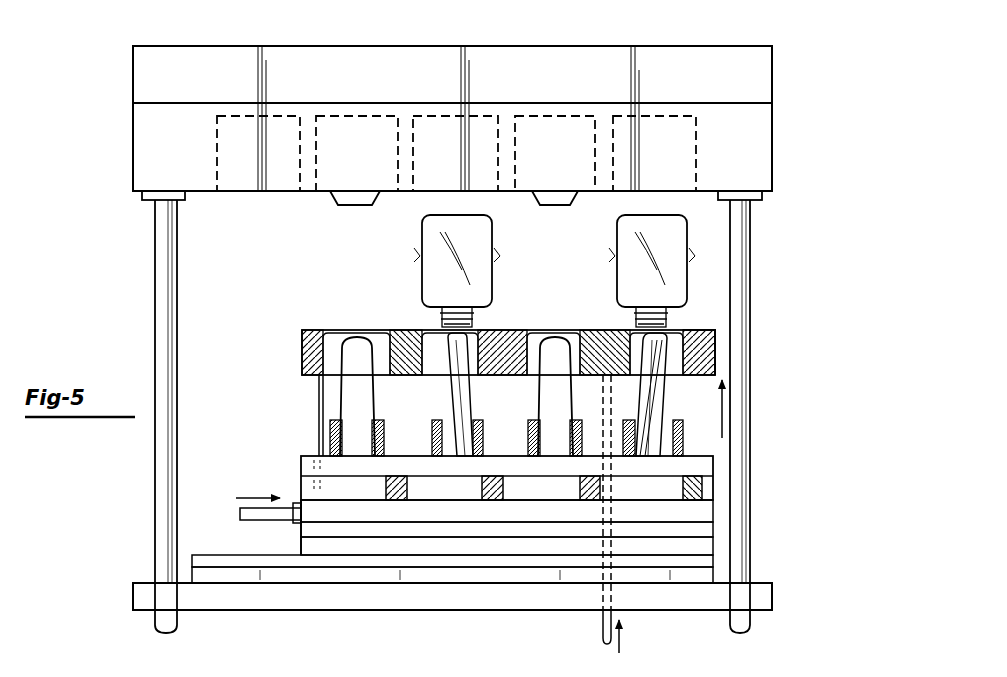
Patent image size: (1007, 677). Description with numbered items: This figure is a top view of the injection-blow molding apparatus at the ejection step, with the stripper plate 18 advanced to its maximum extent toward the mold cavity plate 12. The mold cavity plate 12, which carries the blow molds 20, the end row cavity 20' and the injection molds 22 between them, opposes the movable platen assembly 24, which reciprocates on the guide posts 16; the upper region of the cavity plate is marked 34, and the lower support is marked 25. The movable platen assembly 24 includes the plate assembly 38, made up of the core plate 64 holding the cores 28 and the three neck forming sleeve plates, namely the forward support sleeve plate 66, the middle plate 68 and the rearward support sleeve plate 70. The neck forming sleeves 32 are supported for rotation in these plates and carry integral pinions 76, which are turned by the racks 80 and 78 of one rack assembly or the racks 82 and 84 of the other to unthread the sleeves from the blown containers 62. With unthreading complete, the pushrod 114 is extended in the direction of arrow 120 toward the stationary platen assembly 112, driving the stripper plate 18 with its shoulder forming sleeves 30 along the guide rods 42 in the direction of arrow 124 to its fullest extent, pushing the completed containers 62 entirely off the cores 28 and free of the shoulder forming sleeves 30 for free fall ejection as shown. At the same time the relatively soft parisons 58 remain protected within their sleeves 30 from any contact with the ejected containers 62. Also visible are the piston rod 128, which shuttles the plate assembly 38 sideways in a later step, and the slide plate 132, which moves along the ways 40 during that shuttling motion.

The mold cavity plate 12 is at (738, 151).
The upper compartment 34 is at (678, 83).
The stationary platen assembly 112 is at (128, 166).
The blow mold 20 is at (506, 175).
The end row cavity 20' is at (258, 170).
The injection mold 22 is at (330, 200).
The guide post 16 is at (176, 286).
The blown container 62 is at (616, 270).
The shoulder forming sleeve 30 is at (392, 330).
The stripper plate 18 is at (710, 330).
The parison 58 is at (352, 337).
The neck forming sleeve 32 is at (434, 427).
The core 28 is at (664, 404).
The guide rod 42 is at (318, 415).
The forward support sleeve plate 66 is at (507, 456).
The pinion 76 is at (482, 490).
The rack 80 is at (386, 490).
The rack 78 is at (580, 490).
The rack 82 is at (482, 500).
The rack 84 is at (655, 504).
The neck forming sleeve plate 68 is at (713, 485).
The rearward support sleeve plate 70 is at (707, 515).
The core plate 64 is at (707, 530).
The plate assembly 38 is at (296, 537).
The slide plate 132 is at (707, 547).
The ways 40 is at (713, 578).
The piston rod 128 is at (240, 513).
The pushrod 114 is at (602, 634).
The arrow 120 is at (623, 637).
The arrow 124 is at (722, 415).
The movable platen assembly 24 is at (336, 612).
The base plate bottom 25 is at (490, 600).